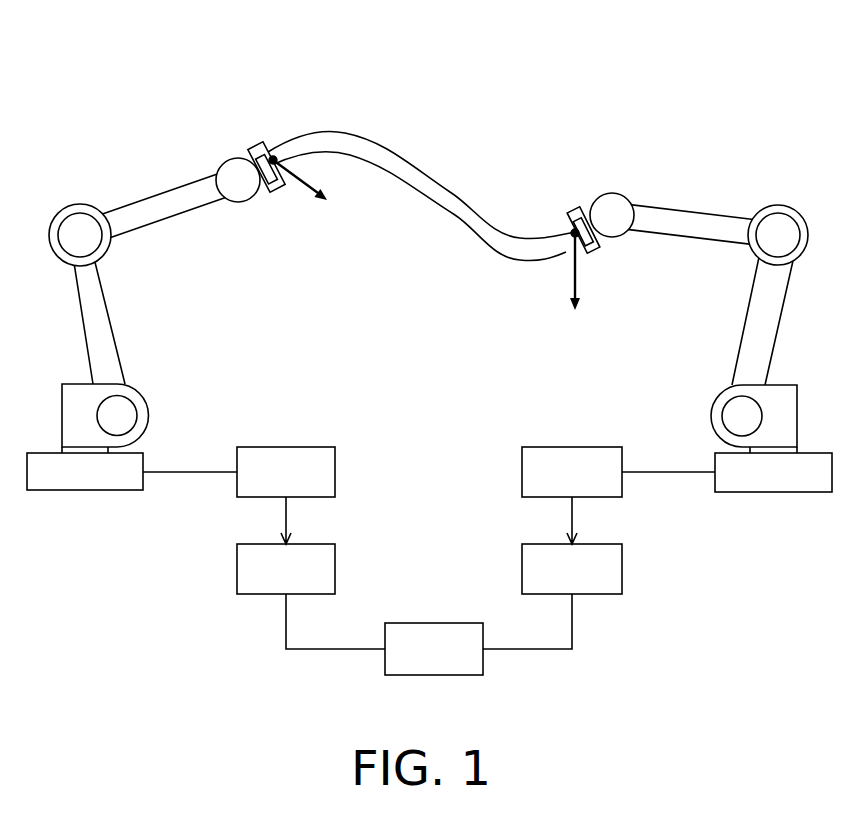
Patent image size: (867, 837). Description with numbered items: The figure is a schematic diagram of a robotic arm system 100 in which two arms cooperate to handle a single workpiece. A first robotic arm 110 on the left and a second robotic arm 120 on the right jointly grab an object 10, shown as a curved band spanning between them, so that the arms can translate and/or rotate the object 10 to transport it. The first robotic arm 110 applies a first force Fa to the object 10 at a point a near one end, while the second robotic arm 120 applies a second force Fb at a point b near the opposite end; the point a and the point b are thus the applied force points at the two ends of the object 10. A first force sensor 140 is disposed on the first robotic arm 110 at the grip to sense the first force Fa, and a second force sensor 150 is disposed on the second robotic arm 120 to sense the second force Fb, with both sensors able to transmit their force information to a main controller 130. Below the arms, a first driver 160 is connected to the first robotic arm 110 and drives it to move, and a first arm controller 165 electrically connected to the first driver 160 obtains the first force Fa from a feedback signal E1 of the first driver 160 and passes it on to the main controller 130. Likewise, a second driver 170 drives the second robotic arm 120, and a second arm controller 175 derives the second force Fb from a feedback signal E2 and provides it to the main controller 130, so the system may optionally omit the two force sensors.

The robotic arm system 100 is at (167, 65).
The object 10 is at (327, 142).
The first robotic arm 110 is at (163, 190).
The second robotic arm 120 is at (692, 208).
The main controller 130 is at (413, 664).
The first force sensor 140 is at (255, 147).
The second force sensor 150 is at (580, 207).
The first driver 160 is at (265, 487).
The first arm controller 165 is at (265, 584).
The second driver 170 is at (551, 487).
The second arm controller 175 is at (551, 584).
The point a is at (274, 157).
The point b is at (572, 232).
The first force Fa is at (307, 198).
The second force Fb is at (578, 290).
The feedback signal E1 is at (304, 520).
The feedback signal E2 is at (590, 520).